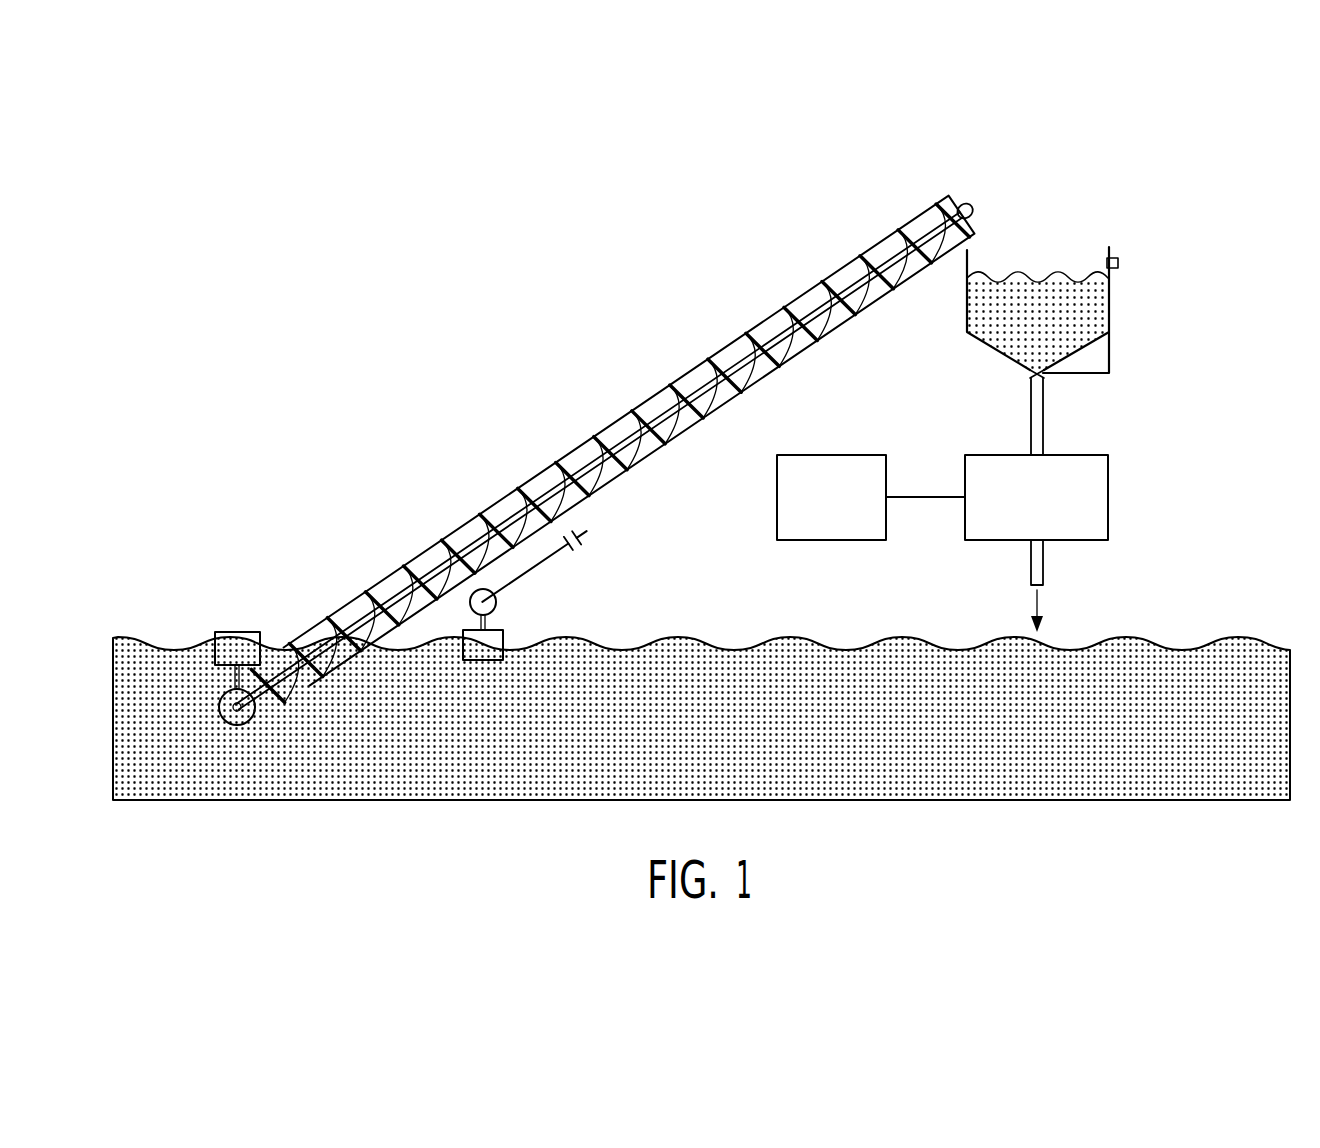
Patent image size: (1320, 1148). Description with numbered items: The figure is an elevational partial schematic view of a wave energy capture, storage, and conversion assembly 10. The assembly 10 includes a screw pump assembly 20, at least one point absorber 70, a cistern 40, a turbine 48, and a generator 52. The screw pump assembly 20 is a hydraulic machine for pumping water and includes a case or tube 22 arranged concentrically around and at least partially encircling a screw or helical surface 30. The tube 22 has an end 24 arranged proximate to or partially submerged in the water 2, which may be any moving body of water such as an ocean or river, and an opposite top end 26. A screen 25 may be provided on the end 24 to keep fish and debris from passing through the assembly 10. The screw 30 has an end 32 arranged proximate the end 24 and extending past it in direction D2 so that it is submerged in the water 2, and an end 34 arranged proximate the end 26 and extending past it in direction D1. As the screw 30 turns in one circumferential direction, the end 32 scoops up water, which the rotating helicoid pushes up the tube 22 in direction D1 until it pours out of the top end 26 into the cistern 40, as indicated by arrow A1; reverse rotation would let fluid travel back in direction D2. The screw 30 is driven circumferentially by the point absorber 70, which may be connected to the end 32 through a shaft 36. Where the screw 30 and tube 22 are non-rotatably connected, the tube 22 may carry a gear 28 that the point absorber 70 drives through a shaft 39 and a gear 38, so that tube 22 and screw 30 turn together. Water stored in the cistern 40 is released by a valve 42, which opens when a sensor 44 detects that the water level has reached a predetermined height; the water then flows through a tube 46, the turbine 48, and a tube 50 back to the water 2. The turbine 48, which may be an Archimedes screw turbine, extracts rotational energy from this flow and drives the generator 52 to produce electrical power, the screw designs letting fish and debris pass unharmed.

The water 2 is at (147, 652).
The wave energy capture, storage, and conversion assembly 10 is at (755, 182).
The screw pump assembly 20 is at (704, 312).
The tube 22 is at (675, 378).
The end 24 is at (292, 645).
The screen 25 is at (293, 693).
The end 26 is at (947, 202).
The gear 28 is at (607, 512).
The screw 30 is at (760, 372).
The end 32 is at (295, 718).
The end 34 is at (989, 197).
The shaft 36 is at (250, 723).
The gear 38 is at (590, 535).
The shaft 39 is at (550, 560).
The cistern 40 is at (967, 308).
The valve 42 is at (1030, 374).
The sensor 44 is at (1118, 263).
The tube 46 is at (1044, 410).
The turbine 48 is at (1108, 497).
The tube 50 is at (1044, 562).
The generator 52 is at (870, 455).
The point absorber 70 is at (225, 585).
The arrow A1 is at (997, 254).
The direction D1 is at (440, 491).
The direction D2 is at (436, 514).